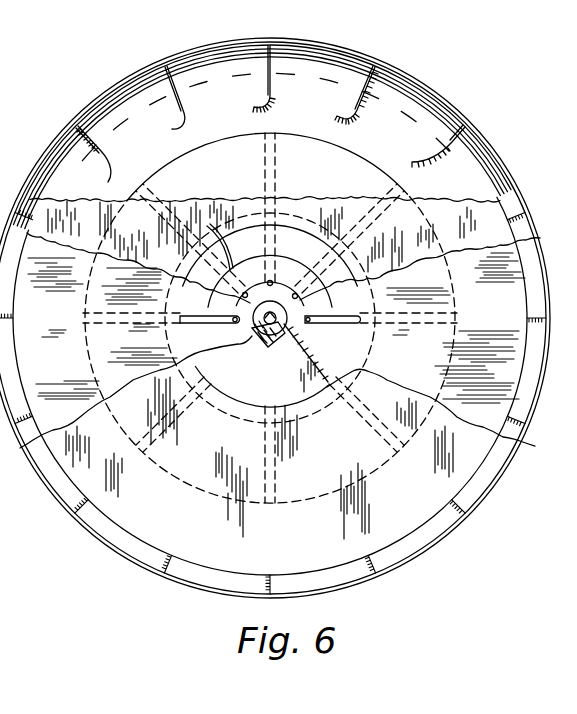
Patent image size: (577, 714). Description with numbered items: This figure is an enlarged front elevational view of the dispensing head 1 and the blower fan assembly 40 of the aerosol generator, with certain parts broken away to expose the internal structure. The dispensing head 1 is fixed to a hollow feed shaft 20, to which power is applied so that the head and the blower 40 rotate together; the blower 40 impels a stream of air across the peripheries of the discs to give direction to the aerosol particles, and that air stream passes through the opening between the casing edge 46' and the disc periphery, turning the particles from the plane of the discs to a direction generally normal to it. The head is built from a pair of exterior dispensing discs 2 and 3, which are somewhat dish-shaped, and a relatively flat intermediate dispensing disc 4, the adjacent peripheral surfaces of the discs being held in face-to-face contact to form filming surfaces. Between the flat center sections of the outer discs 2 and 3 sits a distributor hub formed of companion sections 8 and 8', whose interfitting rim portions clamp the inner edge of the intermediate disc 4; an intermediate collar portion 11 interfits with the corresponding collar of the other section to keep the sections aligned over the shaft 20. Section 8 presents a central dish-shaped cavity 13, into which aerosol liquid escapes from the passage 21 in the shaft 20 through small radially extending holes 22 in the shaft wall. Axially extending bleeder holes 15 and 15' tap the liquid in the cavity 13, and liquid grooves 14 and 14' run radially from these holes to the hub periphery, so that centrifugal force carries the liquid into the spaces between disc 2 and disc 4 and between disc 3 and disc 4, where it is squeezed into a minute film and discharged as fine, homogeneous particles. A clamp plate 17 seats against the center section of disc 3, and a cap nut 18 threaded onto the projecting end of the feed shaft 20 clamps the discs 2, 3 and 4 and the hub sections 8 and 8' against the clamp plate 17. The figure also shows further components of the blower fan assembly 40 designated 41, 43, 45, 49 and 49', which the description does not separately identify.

The dispensing head 1 is at (529, 282).
The exterior dispensing disc 2 is at (445, 211).
The exterior dispensing disc 3 is at (412, 399).
The intermediate dispensing disc 4 is at (468, 278).
The distributor hub companion section 8 is at (270, 230).
The distributor hub companion section 8' is at (291, 318).
The intermediate collar portion 11 is at (212, 242).
The dish-shaped cavity 13 is at (296, 293).
The liquid groove 14 is at (270, 234).
The liquid groove 14' is at (270, 335).
The axially extending hole 15 is at (338, 304).
The axially extending hole 15' is at (263, 330).
The clamp plate 17 is at (250, 398).
The cap nut 18 is at (262, 340).
The hollow shaft 20 is at (293, 344).
The passage 21 is at (252, 328).
The radially extending holes 22 is at (259, 295).
The blower fan assembly 40 is at (172, 165).
The cover edge 41 is at (349, 164).
The pin 43 is at (258, 150).
The rim flange 45 is at (415, 80).
The casing edge 46' is at (447, 120).
The hook 49 is at (227, 124).
The hook 49' is at (295, 84).